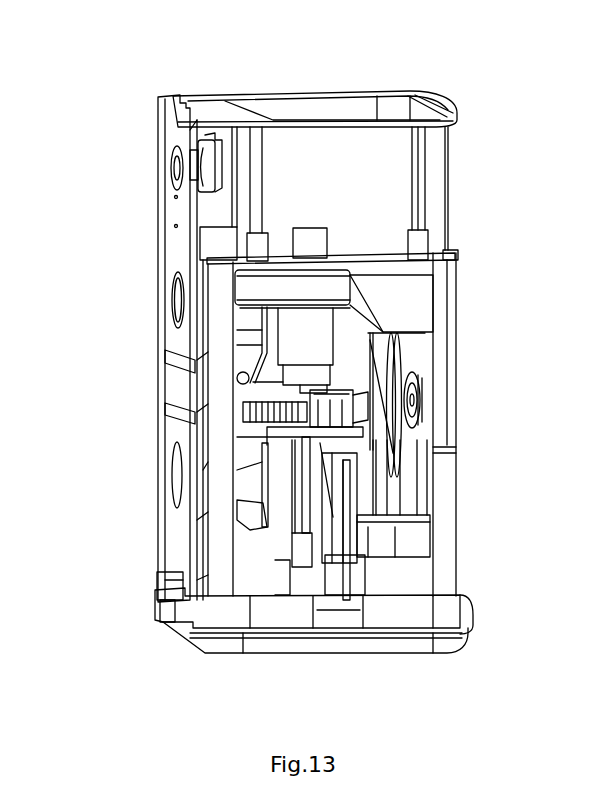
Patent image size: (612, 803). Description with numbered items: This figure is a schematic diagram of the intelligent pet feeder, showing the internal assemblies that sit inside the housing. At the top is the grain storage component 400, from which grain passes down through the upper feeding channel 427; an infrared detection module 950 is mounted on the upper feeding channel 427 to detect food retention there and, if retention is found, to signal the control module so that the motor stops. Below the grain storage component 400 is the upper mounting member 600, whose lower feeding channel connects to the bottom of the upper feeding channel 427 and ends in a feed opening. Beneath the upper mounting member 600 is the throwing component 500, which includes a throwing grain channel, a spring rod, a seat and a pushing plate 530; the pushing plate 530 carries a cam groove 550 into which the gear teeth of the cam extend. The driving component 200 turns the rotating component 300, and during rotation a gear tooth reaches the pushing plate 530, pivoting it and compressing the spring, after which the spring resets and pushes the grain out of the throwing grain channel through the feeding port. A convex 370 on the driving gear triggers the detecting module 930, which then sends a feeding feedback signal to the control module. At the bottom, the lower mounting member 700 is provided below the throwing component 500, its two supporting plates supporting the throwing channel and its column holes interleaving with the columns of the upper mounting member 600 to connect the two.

The driving component 200 is at (417, 398).
The rotating component 300 is at (310, 321).
The convex 370 is at (266, 427).
The grain storage component 400 is at (363, 170).
The upper feeding channel 427 is at (243, 337).
The throwing component 500 is at (280, 533).
The pushing plate 530 is at (315, 500).
The cam groove 550 is at (327, 487).
The upper mounting member 600 is at (223, 150).
The lower mounting member 700 is at (177, 163).
The detecting module 930 is at (343, 430).
The infrared detection module 950 is at (246, 380).